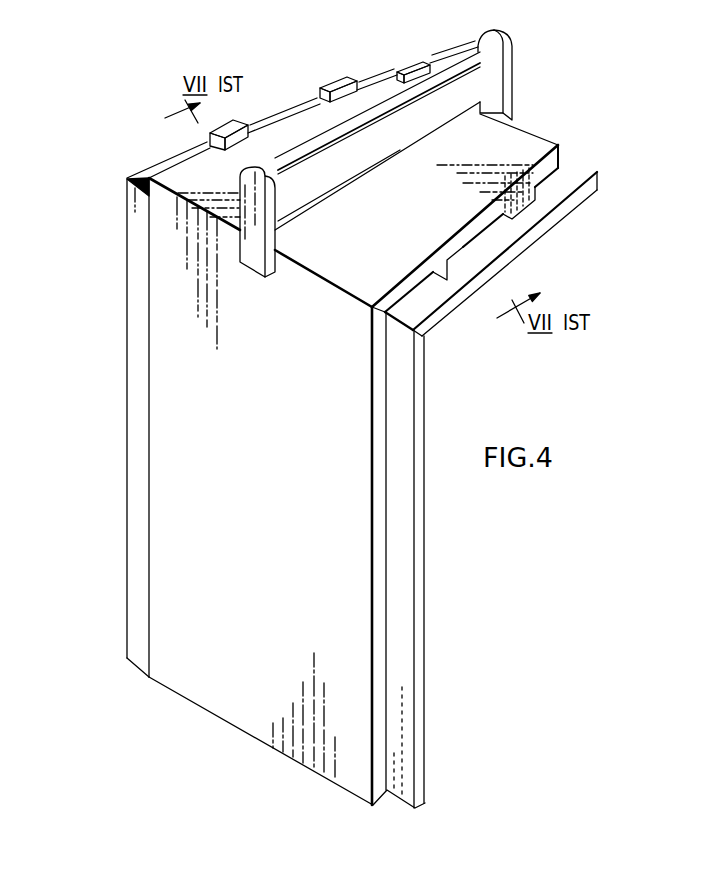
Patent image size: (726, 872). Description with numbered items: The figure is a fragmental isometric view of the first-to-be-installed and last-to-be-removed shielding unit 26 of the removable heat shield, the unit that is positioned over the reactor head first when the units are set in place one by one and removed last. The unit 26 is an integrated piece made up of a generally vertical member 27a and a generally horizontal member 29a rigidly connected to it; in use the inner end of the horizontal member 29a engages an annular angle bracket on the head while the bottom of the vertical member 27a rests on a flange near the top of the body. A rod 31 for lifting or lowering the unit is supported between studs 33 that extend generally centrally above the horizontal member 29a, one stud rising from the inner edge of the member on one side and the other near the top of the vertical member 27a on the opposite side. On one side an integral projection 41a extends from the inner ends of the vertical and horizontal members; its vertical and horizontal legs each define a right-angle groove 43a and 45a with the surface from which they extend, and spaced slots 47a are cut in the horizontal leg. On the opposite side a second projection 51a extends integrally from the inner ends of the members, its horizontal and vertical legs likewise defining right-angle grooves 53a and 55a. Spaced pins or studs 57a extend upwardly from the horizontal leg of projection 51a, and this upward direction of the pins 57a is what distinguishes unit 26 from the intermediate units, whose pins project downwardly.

The first-to-be-installed and last-to-be-removed shielding unit 26 is at (558, 145).
The vertical member 27a is at (220, 665).
The horizontal member 29a is at (513, 147).
The rod 31 is at (357, 162).
The studs 33 is at (490, 32).
The integral projection 41a is at (597, 172).
The right-angle groove 43a is at (385, 547).
The right-angle groove 45a is at (479, 234).
The spaced slots 47a is at (447, 262).
The projection 51a is at (283, 118).
The right-angle groove 53a is at (150, 517).
The right-angle groove 55a is at (149, 194).
The pins or studs 57a is at (338, 84).